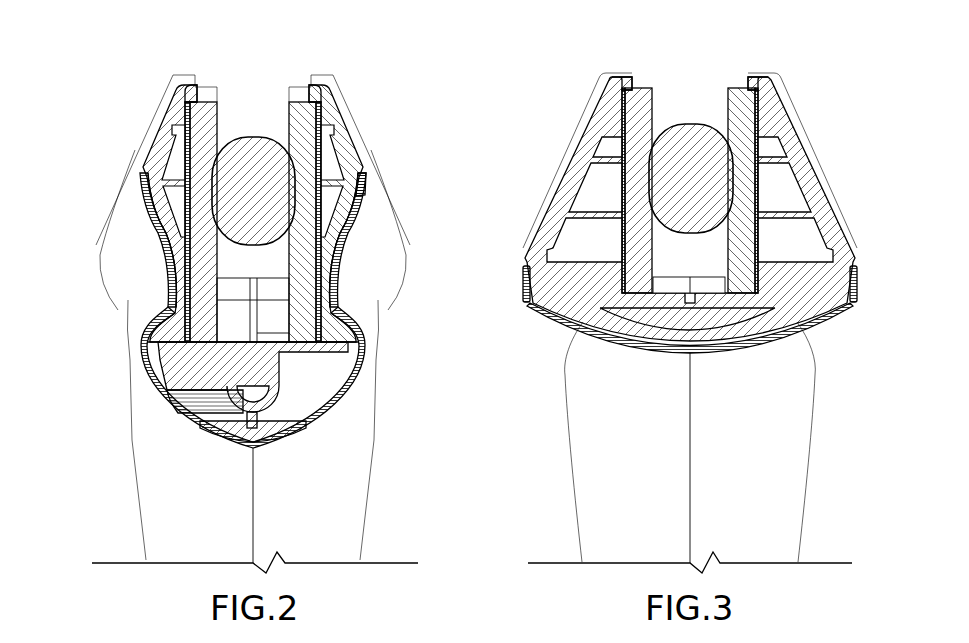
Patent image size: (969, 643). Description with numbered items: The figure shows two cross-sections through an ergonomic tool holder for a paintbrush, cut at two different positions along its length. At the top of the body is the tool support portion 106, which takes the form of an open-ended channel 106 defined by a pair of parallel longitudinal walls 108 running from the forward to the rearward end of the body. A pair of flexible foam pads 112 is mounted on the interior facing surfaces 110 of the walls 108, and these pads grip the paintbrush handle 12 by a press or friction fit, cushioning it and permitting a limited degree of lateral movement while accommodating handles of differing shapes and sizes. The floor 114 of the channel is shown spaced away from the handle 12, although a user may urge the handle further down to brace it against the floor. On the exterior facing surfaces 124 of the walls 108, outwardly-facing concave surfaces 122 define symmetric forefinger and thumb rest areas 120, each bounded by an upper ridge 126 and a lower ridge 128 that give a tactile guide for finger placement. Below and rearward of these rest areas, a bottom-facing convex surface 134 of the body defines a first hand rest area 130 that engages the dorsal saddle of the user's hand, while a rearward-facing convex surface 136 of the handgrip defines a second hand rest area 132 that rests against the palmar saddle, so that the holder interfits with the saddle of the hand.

In FIG. 2, the handle 12 is at (264, 136).
In FIG. 3, the handle 12 is at (698, 122).
In FIG. 2, the tool support portion 106 is at (272, 45).
In FIG. 3, the tool support portion 106 is at (712, 46).
In FIG. 2, the longitudinal walls 108 is at (235, 88).
In FIG. 3, the longitudinal walls 108 is at (668, 88).
In FIG. 2, the interior facing surfaces 110 is at (183, 88).
In FIG. 3, the interior facing surfaces 110 is at (758, 78).
In FIG. 2, the flexible foam pads 112 is at (305, 130).
In FIG. 3, the flexible foam pads 112 is at (632, 128).
In FIG. 2, the floor 114 is at (238, 278).
In FIG. 3, the floor 114 is at (707, 276).
In FIG. 2, the forefinger and thumb rest areas 120 is at (162, 288).
In FIG. 2, the concave surfaces 122 is at (150, 226).
In FIG. 2, the exterior facing surfaces 124 is at (165, 128).
In FIG. 3, the exterior facing surfaces 124 is at (798, 176).
In FIG. 2, the upper ridge 126 is at (370, 190).
In FIG. 2, the lower ridge 128 is at (370, 360).
In FIG. 3, the first hand rest area 130 is at (628, 350).
In FIG. 3, the second hand rest area 132 is at (763, 425).
In FIG. 3, the convex surface 134 is at (630, 362).
In FIG. 3, the convex surface 136 is at (750, 455).